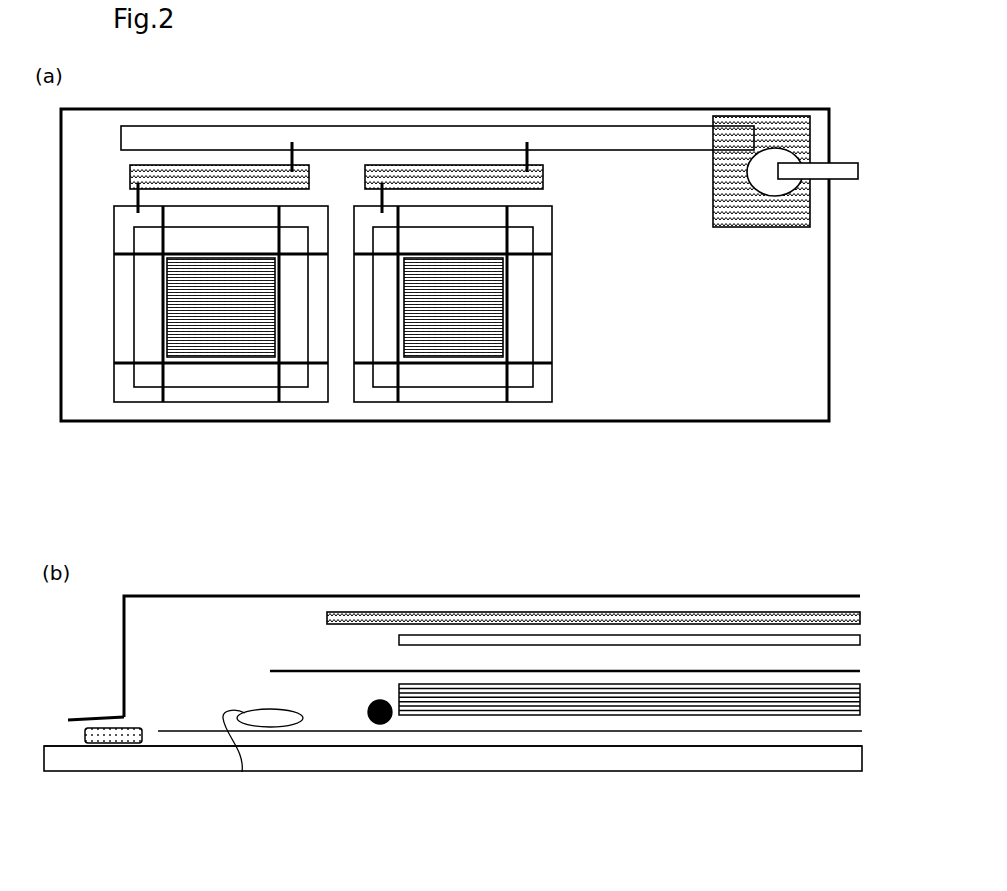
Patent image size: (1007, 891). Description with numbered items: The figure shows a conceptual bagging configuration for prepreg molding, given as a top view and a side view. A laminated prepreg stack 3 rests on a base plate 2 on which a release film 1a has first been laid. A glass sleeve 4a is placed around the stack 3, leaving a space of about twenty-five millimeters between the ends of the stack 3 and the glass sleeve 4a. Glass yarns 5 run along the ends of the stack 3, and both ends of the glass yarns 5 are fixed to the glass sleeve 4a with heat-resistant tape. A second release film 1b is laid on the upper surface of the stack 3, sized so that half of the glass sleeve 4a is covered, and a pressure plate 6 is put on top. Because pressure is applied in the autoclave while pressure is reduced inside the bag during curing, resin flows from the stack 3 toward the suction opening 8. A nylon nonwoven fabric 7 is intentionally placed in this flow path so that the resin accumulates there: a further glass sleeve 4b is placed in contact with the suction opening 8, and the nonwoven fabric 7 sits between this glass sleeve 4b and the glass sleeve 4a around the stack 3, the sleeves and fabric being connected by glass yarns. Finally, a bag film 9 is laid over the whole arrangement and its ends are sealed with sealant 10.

The release film 1a is at (697, 730).
The release film 1b is at (440, 372).
The base plate 2 is at (692, 402).
The stack 3 is at (217, 342).
The glass sleeve 4a is at (543, 337).
The glass sleeve 4b is at (547, 137).
The glass yarn 5 is at (507, 380).
The pressure plate 6 is at (792, 637).
The nylon nonwoven fabric 7 is at (422, 175).
The suction opening 8 is at (845, 168).
The bag film 9 is at (363, 596).
The sealant 10 is at (85, 735).